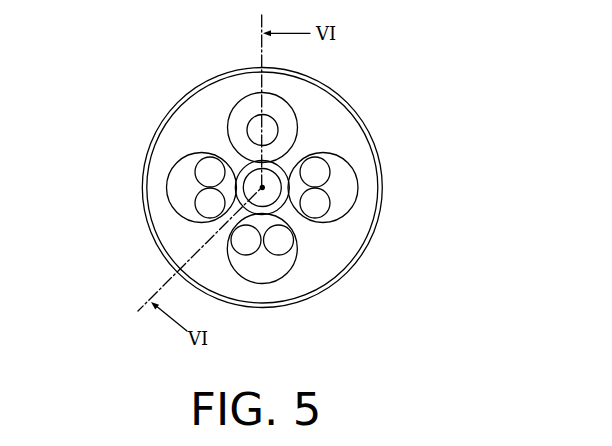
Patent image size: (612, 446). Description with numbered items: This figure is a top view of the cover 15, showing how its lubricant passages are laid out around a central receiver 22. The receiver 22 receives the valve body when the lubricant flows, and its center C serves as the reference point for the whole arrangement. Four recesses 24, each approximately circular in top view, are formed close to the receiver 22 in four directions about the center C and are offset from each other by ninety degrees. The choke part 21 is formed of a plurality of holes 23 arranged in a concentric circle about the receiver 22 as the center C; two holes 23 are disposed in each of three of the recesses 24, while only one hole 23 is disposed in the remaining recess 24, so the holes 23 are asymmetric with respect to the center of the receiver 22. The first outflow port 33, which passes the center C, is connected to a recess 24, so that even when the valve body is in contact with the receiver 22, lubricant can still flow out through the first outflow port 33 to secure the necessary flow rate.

The cover 15 is at (276, 309).
The choke part 21 is at (101, 121).
The receiver 22 is at (290, 187).
The holes 23 is at (243, 120).
The recesses 24 is at (239, 98).
The first outflow port 33 is at (269, 182).
The center C is at (262, 188).